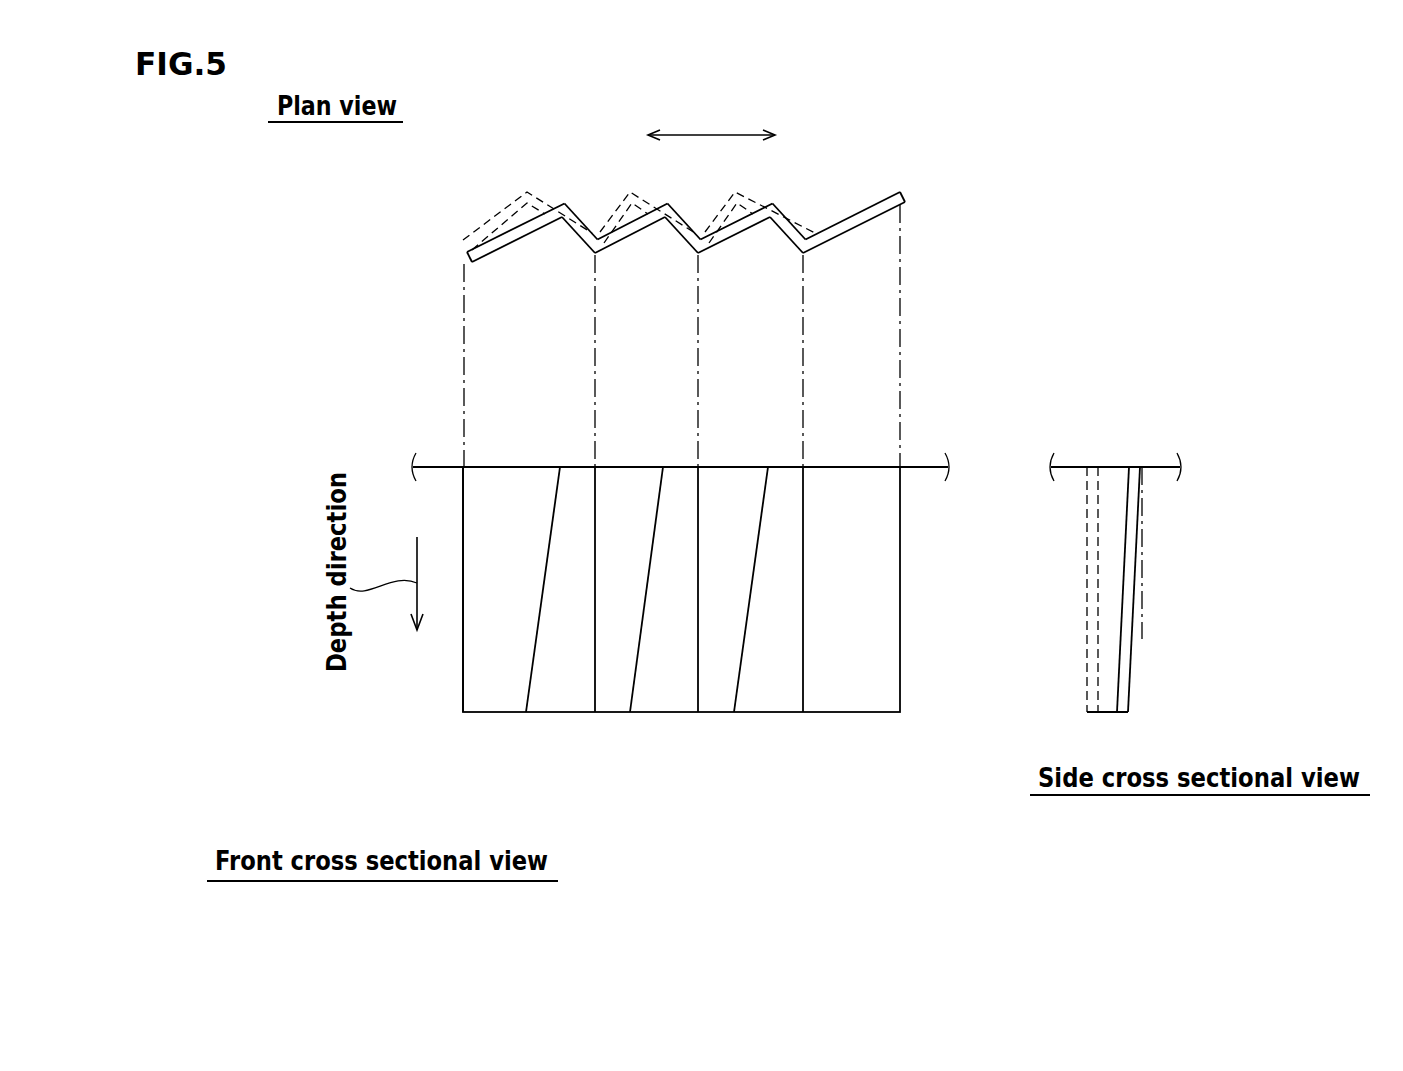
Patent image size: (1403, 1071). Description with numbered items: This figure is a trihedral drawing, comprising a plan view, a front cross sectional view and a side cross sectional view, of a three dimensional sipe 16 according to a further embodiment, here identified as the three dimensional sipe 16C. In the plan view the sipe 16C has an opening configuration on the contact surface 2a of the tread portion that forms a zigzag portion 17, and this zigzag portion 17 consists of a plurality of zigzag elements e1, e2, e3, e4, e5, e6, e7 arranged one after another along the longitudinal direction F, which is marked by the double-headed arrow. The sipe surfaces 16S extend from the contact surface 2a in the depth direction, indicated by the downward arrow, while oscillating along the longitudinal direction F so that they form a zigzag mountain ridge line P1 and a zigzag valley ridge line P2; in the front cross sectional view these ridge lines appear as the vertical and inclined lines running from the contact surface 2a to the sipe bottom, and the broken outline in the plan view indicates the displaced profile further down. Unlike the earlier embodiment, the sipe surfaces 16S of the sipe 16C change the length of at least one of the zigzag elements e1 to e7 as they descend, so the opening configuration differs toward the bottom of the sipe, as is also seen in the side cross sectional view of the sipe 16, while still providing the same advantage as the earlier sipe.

The three dimensional sipe 16C is at (625, 453).
The zigzag portion 17 is at (686, 227).
The sipe surfaces 16S is at (488, 495).
The contact surface 2a is at (922, 466).
The three dimensional sipe 16 is at (1130, 688).
The zigzag mountain ridge line P1 is at (806, 254).
The zigzag valley ridge line P2 is at (777, 197).
The zigzag element e1 is at (505, 240).
The zigzag element e2 is at (578, 222).
The zigzag element e3 is at (628, 230).
The zigzag element e4 is at (686, 226).
The zigzag element e5 is at (733, 230).
The zigzag element e6 is at (786, 225).
The zigzag element e7 is at (860, 218).
The longitudinal direction F is at (703, 133).